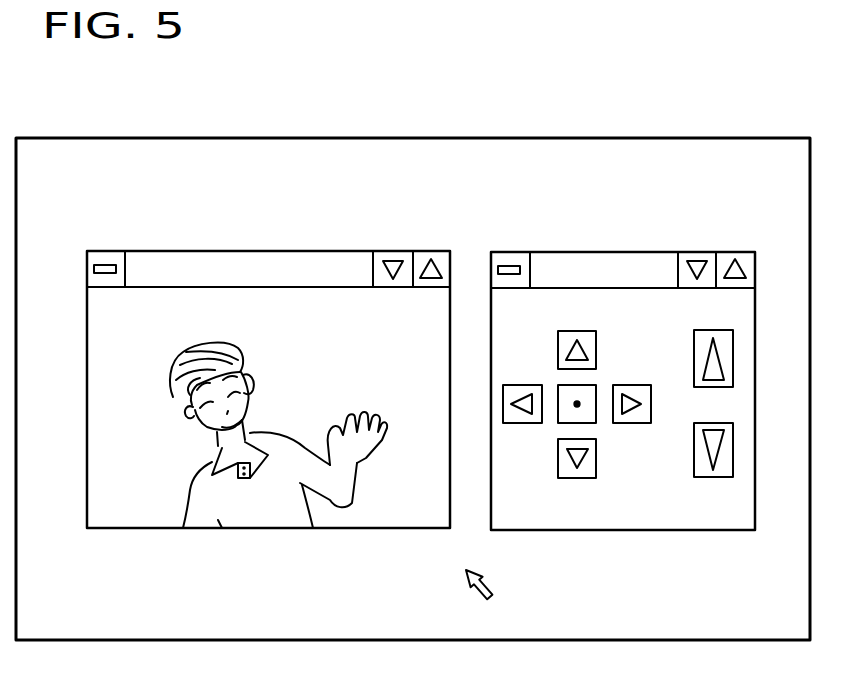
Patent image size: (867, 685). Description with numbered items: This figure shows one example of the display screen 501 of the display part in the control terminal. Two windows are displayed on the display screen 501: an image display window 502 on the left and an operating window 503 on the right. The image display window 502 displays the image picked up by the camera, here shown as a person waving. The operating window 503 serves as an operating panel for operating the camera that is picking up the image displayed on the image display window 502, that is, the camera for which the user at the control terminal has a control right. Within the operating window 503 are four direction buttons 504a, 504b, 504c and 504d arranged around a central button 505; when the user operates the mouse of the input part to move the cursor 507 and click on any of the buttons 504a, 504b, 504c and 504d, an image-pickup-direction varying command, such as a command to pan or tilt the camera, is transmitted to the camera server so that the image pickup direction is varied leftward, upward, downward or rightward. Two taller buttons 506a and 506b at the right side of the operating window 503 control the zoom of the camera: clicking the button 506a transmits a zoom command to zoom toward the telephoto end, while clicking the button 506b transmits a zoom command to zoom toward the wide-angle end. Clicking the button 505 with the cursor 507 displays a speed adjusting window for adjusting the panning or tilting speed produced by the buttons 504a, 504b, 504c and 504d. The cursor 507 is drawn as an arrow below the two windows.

The display screen 501 is at (230, 138).
The image display window 502 is at (213, 251).
The operating window 503 is at (570, 252).
The button 504a is at (520, 423).
The button 504b is at (558, 345).
The button 504c is at (572, 478).
The button 504d is at (630, 423).
The button 505 is at (590, 385).
The button 506a is at (694, 350).
The button 506b is at (705, 477).
The cursor 507 is at (488, 588).